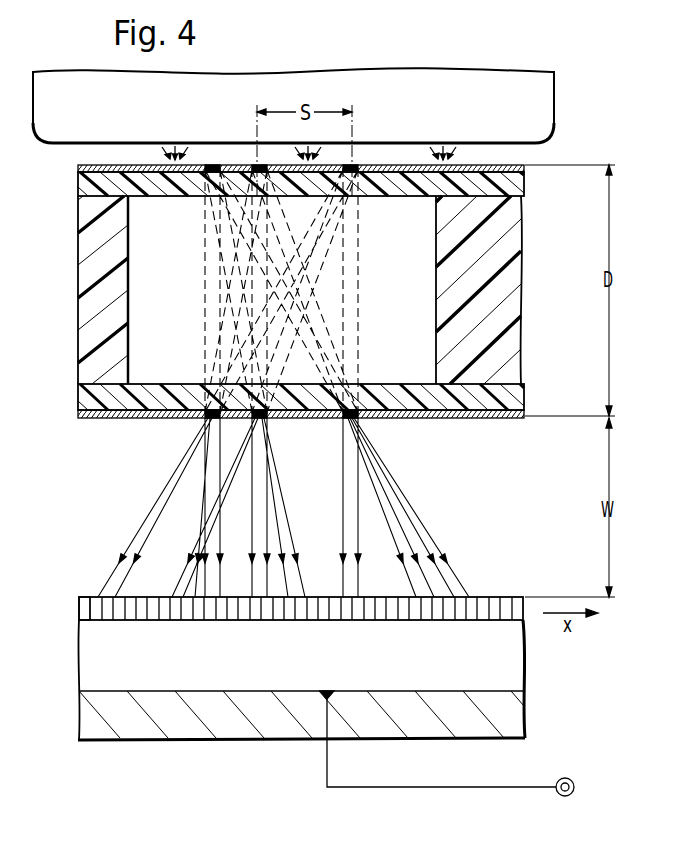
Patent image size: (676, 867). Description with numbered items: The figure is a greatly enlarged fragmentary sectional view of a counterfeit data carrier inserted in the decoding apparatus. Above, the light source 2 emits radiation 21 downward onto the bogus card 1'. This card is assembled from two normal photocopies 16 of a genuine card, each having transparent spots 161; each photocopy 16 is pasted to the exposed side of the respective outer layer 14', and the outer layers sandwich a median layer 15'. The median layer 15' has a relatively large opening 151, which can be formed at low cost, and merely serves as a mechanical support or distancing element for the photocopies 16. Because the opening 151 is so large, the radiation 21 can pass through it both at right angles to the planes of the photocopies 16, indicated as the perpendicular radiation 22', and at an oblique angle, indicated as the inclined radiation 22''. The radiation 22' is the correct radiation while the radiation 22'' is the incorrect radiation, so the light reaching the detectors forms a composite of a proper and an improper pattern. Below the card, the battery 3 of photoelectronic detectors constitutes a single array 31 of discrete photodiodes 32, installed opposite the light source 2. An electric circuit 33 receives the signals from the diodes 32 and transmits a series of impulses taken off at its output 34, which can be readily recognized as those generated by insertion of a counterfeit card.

The light source 2 is at (545, 104).
The radiation 21 is at (452, 152).
The photocopies 16 is at (516, 163).
The outer layer 14' is at (326, 291).
The transparent spots 161 is at (258, 166).
The bogus card 1' is at (276, 290).
The opening 151 is at (130, 297).
The median layer 15' is at (504, 290).
The perpendicular radiation 22' is at (220, 507).
The inclined radiation 22'' is at (415, 507).
The array 31 is at (90, 597).
The photodiodes 32 is at (503, 596).
The battery of detectors 3 is at (153, 742).
The electric circuit 33 is at (209, 679).
The output 34 is at (566, 777).